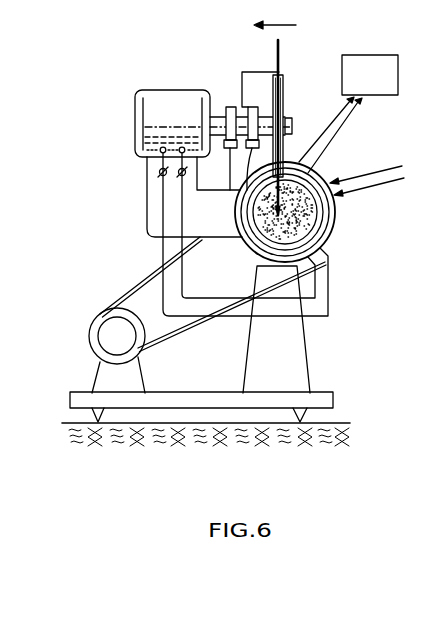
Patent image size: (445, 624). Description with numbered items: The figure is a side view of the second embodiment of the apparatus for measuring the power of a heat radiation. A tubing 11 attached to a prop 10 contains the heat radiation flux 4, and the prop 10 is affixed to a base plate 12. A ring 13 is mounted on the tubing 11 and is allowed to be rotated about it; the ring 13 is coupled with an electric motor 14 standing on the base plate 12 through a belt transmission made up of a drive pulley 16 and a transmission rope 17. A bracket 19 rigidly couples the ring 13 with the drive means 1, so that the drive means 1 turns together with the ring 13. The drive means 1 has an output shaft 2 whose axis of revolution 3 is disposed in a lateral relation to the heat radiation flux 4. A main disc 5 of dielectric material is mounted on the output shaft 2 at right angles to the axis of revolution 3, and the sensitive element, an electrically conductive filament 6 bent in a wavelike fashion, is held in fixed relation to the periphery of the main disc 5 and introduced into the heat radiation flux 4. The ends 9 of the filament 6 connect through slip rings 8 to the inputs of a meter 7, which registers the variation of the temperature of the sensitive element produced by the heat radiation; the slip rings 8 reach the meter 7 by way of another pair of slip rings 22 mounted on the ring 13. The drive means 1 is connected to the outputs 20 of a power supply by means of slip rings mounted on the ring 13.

The drive means 1 is at (165, 98).
The output shaft 2 is at (292, 120).
The axis of revolution 3 is at (216, 118).
The heat radiation flux 4 is at (298, 213).
The main disc 5 is at (283, 83).
The electrically conductive filament 6 is at (281, 47).
The meter 7 is at (370, 75).
The slip rings 8 is at (228, 151).
The ends of the filament 9 is at (260, 72).
The prop 10 is at (302, 345).
The tubing 11 is at (250, 245).
The base plate 12 is at (332, 403).
The ring 13 is at (310, 245).
The electric motor 14 is at (103, 310).
The drive pulley 16 is at (109, 338).
The transmission rope 17 is at (177, 329).
The bracket 19 is at (148, 185).
The outputs of a power supply 20 is at (382, 171).
The another pair of slip rings 22 is at (311, 174).